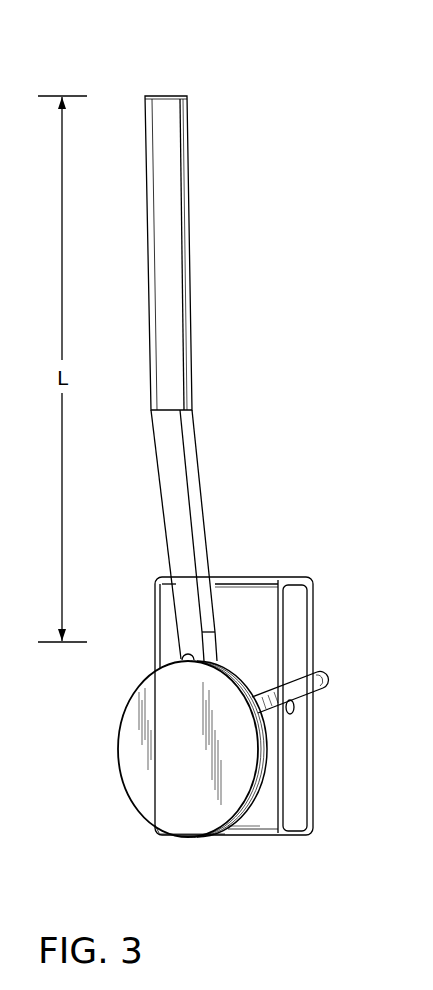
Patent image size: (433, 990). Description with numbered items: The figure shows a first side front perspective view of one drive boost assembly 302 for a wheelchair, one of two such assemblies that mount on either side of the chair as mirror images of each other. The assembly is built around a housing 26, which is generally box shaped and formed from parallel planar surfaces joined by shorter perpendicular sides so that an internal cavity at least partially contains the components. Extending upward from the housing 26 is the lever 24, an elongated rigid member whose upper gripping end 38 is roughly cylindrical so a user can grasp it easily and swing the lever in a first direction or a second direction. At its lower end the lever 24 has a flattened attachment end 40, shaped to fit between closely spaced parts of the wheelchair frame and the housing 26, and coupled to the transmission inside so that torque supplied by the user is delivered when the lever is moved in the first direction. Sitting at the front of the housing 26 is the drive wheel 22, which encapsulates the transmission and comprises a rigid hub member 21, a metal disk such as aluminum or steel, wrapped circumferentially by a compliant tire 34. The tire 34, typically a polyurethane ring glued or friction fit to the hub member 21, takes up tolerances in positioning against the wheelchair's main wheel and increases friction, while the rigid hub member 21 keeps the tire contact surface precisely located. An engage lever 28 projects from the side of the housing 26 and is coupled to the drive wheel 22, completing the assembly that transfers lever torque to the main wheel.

The drive boost assembly 302 is at (135, 80).
The gripping end 38 is at (188, 137).
The lever 24 is at (158, 462).
The attachment end 40 is at (192, 640).
The housing 26 is at (253, 585).
The drive wheel 22 is at (120, 727).
The hub member 21 is at (154, 770).
The tire 34 is at (227, 827).
The engage lever 28 is at (317, 678).